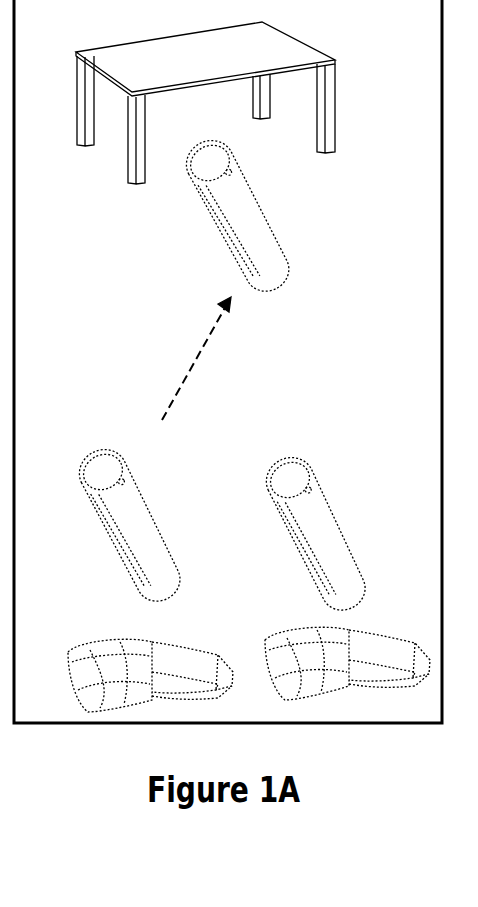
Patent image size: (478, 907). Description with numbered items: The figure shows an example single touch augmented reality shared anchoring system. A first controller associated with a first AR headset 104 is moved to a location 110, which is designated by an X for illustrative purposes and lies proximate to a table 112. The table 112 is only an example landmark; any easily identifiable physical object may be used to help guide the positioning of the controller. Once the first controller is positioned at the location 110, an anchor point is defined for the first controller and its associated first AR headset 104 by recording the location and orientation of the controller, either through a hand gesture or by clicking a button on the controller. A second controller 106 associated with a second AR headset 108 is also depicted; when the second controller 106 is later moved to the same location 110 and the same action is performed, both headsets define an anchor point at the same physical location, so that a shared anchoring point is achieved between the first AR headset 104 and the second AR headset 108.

The first AR headset 104 is at (178, 643).
The second controller 106 is at (335, 512).
The second AR headset 108 is at (367, 685).
The location 110 is at (243, 142).
The table 112 is at (307, 42).